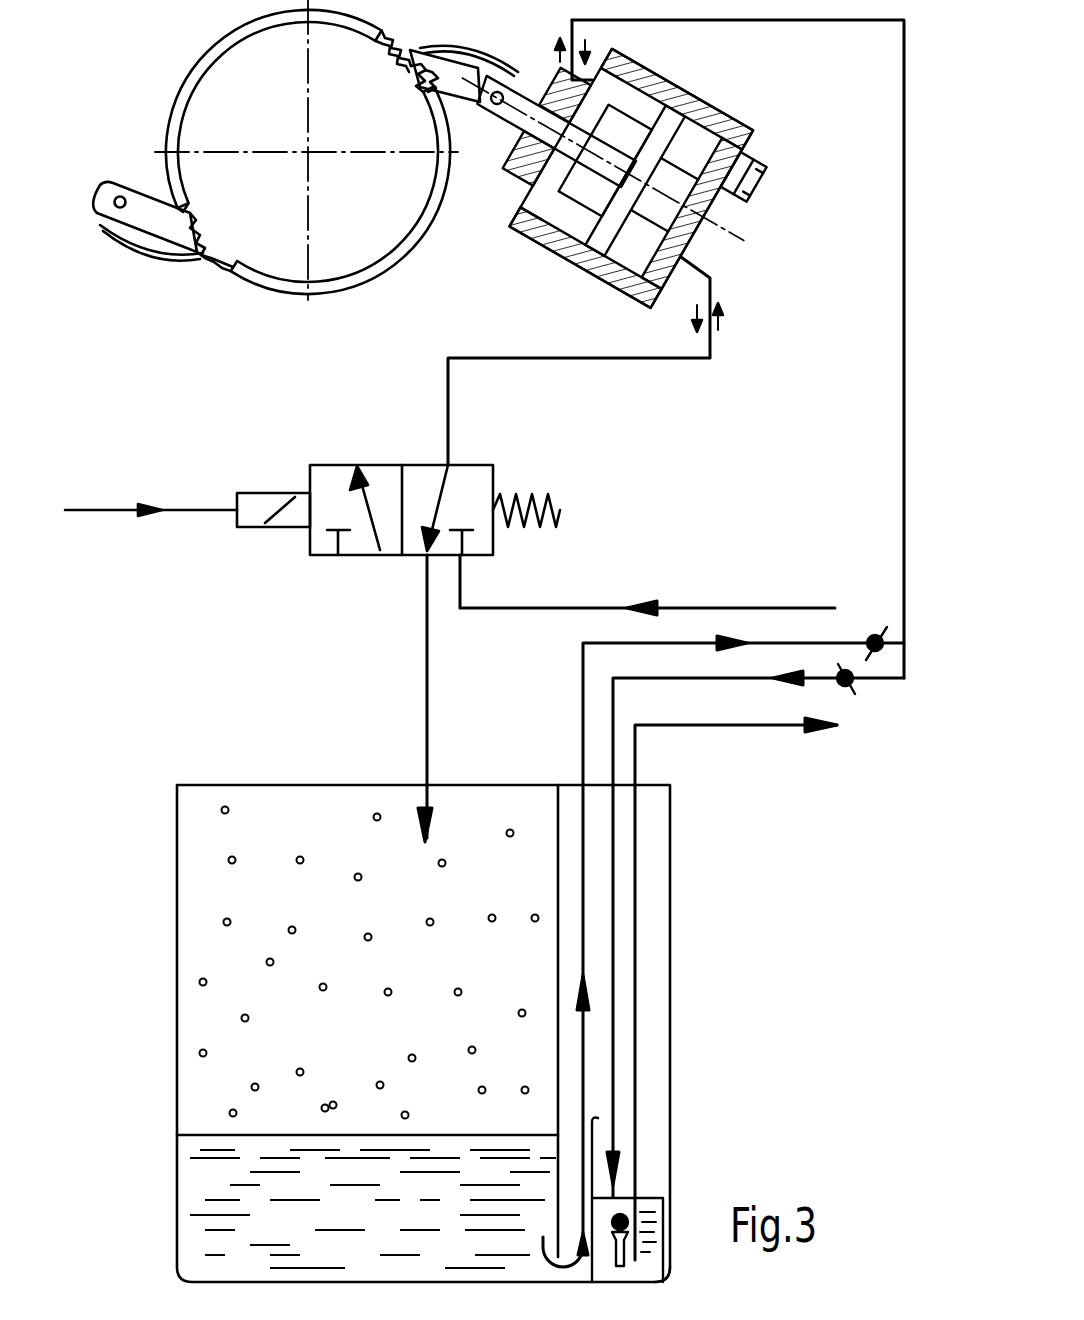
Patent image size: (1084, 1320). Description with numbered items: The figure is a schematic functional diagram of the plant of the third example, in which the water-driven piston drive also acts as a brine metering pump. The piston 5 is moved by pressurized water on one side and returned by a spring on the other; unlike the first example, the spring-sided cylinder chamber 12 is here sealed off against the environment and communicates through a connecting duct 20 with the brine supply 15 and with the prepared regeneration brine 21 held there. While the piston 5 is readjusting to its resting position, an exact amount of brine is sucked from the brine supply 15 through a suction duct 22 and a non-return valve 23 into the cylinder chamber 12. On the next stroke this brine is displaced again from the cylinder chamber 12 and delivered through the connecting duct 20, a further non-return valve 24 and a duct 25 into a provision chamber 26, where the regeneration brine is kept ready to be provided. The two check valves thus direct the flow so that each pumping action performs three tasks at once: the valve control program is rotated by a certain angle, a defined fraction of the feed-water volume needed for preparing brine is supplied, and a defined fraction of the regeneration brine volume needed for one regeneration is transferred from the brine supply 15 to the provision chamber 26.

The piston 5 is at (657, 87).
The cylinder chamber 12 is at (527, 213).
The brine supply 15 is at (210, 1207).
The connecting duct 20 is at (905, 445).
The prepared regeneration brine 21 is at (660, 1198).
The suction duct 22 is at (581, 678).
The non-return valve 23 is at (890, 603).
The further non-return valve 24 is at (848, 690).
The duct 25 is at (613, 747).
The provision chamber 26 is at (665, 1276).